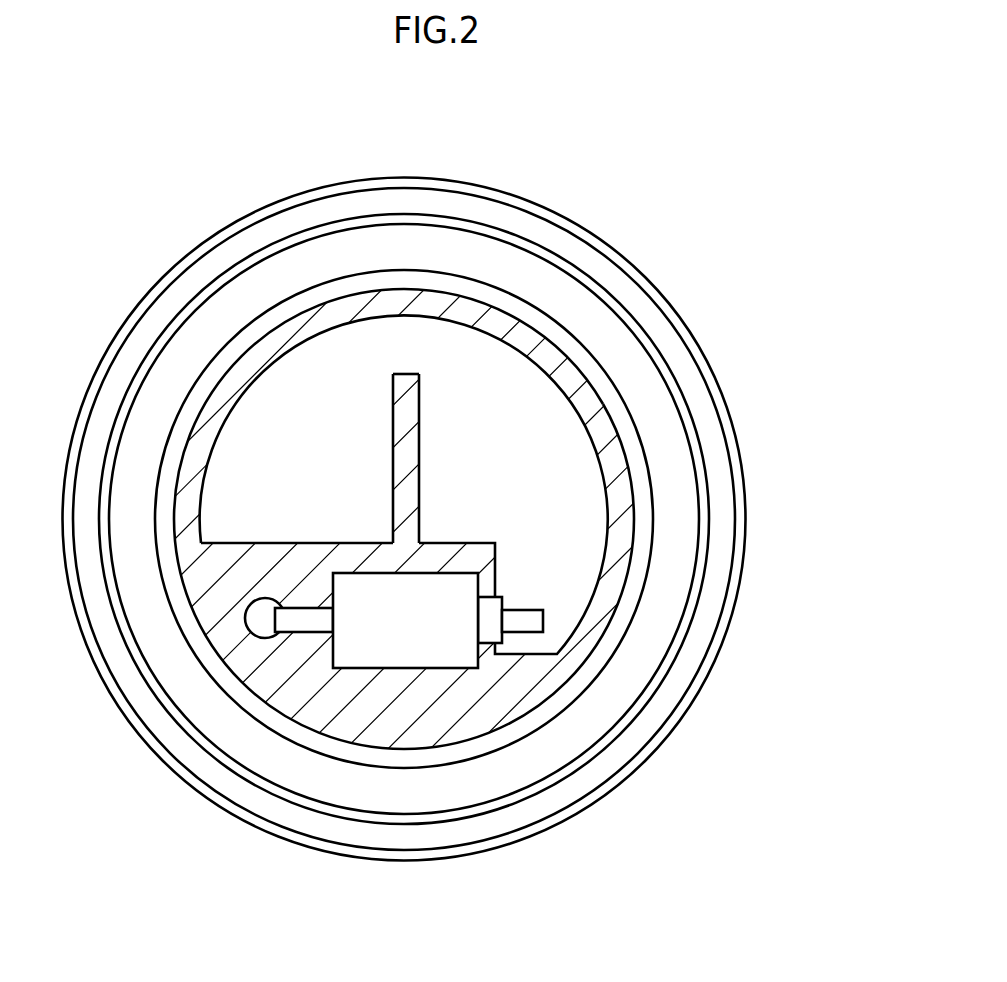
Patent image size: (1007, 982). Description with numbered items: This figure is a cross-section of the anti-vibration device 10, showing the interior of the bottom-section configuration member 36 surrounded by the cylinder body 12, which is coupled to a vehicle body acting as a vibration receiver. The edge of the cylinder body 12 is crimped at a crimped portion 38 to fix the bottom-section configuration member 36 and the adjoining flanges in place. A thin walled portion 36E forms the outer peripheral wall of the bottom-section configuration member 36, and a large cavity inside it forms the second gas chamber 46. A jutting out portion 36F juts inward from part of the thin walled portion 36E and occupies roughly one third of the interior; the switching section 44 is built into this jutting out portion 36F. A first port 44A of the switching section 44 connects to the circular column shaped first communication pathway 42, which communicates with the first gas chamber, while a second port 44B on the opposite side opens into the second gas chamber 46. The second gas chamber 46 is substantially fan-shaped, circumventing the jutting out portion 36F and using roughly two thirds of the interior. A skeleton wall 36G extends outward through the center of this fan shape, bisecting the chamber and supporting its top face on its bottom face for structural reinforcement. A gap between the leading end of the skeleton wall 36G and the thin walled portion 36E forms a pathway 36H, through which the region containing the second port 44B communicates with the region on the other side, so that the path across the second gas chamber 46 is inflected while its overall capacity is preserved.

The anti-vibration device 10 is at (503, 513).
The cylinder body 12 is at (708, 685).
The crimped portion 38 is at (645, 710).
The bottom-section configuration member 36 is at (503, 459).
The thin walled portion 36E is at (600, 437).
The jutting out portion 36F is at (253, 590).
The skeleton wall 36G is at (408, 425).
The pathway 36H is at (415, 358).
The second gas chamber 46 is at (573, 523).
The first communication pathway 42 is at (265, 618).
The switching section 44 is at (405, 642).
The first port 44A is at (302, 622).
The second port 44B is at (522, 622).